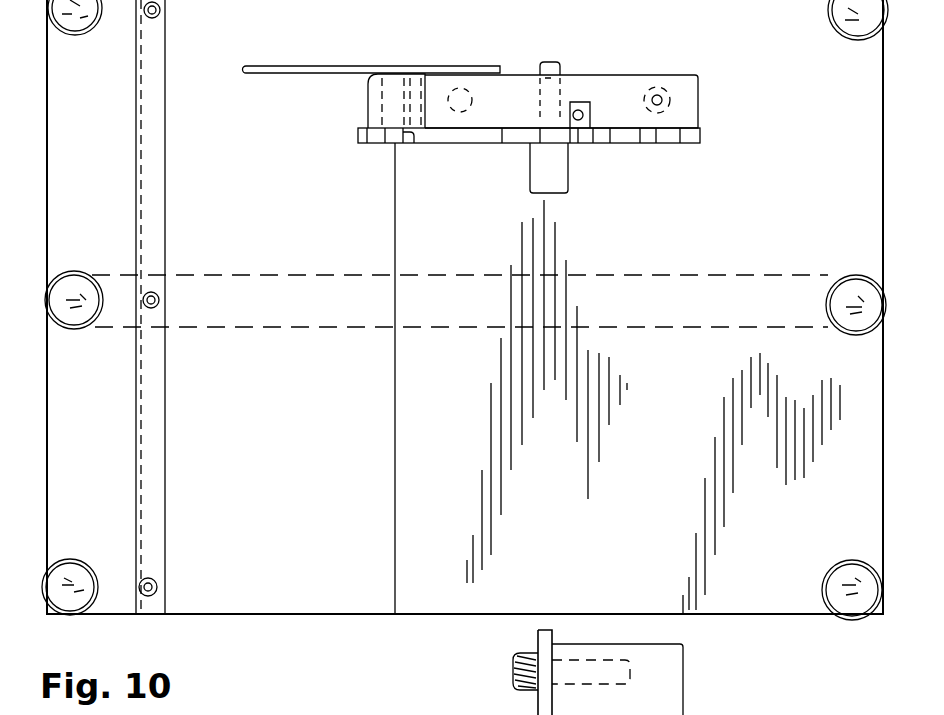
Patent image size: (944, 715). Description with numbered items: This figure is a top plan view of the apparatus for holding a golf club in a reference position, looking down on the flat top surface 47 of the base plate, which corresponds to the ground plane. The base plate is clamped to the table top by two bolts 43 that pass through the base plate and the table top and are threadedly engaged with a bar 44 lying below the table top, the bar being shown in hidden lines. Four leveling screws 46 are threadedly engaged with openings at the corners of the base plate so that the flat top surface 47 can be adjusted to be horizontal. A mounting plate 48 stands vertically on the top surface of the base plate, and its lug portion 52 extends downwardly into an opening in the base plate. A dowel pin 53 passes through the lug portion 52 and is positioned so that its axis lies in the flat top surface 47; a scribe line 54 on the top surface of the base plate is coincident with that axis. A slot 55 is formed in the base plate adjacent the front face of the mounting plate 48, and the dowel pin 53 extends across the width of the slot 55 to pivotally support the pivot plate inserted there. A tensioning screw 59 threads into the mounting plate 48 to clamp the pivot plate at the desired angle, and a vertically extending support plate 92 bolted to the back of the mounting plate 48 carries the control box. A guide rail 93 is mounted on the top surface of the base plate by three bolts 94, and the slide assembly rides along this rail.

The bolt 43 is at (72, 330).
The bar 44 is at (296, 328).
The leveling screw 46 is at (75, 36).
The flat top surface 47 is at (646, 491).
The mounting plate 48 is at (620, 80).
The lug portion 52 is at (368, 90).
The dowel pin 53 is at (410, 140).
The scribe line 54 is at (395, 470).
The slot 55 is at (473, 143).
The tensioning screw 59 is at (555, 172).
The support plate 92 is at (315, 68).
The guide rail 93 is at (150, 493).
The bolt 94 is at (160, 12).